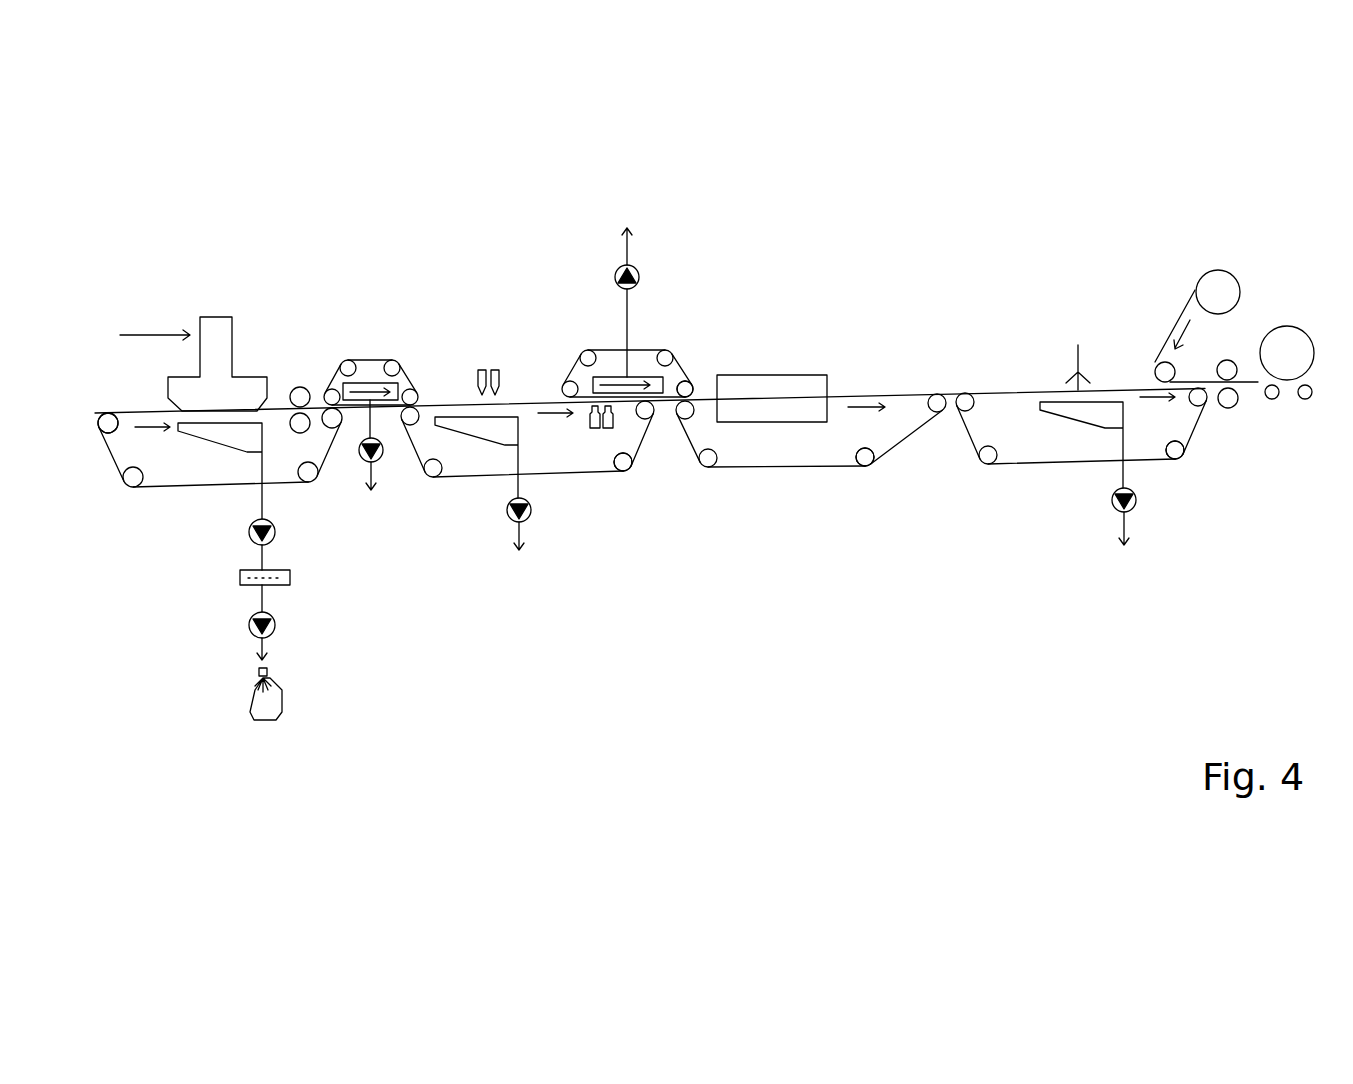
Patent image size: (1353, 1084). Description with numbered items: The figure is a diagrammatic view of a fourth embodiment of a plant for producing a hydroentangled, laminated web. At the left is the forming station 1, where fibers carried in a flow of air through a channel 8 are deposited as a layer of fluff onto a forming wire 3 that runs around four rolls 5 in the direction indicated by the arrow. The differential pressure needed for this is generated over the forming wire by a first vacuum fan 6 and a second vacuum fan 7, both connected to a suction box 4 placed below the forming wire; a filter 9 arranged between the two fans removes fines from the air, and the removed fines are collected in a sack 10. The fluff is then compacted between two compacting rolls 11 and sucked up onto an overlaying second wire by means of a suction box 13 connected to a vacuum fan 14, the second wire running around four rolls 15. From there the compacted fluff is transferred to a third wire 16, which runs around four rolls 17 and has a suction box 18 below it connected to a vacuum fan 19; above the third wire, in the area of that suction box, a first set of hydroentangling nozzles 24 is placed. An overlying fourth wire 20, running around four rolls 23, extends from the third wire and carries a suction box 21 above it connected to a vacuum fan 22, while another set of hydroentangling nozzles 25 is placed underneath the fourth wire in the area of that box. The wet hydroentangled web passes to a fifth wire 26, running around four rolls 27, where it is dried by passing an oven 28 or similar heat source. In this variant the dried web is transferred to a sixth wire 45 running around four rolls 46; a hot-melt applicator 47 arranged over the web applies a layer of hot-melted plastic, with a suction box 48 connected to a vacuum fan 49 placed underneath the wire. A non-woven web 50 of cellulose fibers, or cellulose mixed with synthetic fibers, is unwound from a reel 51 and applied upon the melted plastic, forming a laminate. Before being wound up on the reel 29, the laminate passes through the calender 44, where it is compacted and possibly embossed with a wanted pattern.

The forming station 1 is at (218, 298).
The forming wire 3 is at (142, 412).
The suction box 4 is at (190, 440).
The rolls 5 is at (95, 416).
The first vacuum fan 6 is at (249, 532).
The second vacuum fan 7 is at (249, 625).
The channel 8 is at (138, 335).
The filter 9 is at (240, 580).
The sack 10 is at (250, 712).
The compacting rolls 11 is at (299, 386).
The suction box 13 is at (410, 381).
The vacuum fan 14 is at (357, 455).
The rolls 15 is at (342, 358).
The third wire 16 is at (535, 397).
The rolls 17 is at (632, 473).
The suction box 18 is at (466, 438).
The vacuum fan 19 is at (536, 509).
The fourth wire 20 is at (605, 347).
The suction box 21 is at (638, 368).
The vacuum fan 22 is at (642, 267).
The rolls 23 is at (697, 381).
The hydroentangling nozzles 24 is at (467, 376).
The hydroentangling nozzles 25 is at (609, 436).
The fifth wire 26 is at (875, 394).
The rolls 27 is at (877, 463).
The oven 28 is at (803, 373).
The reel 29 is at (1288, 328).
The calender 44 is at (1243, 405).
The sixth wire 45 is at (988, 392).
The rolls 46 is at (1188, 449).
The hot-melt applicator 47 is at (1066, 368).
The suction box 48 is at (1056, 417).
The vacuum fan 49 is at (1142, 493).
The non-woven web 50 is at (1173, 322).
The reel 51 is at (1218, 288).